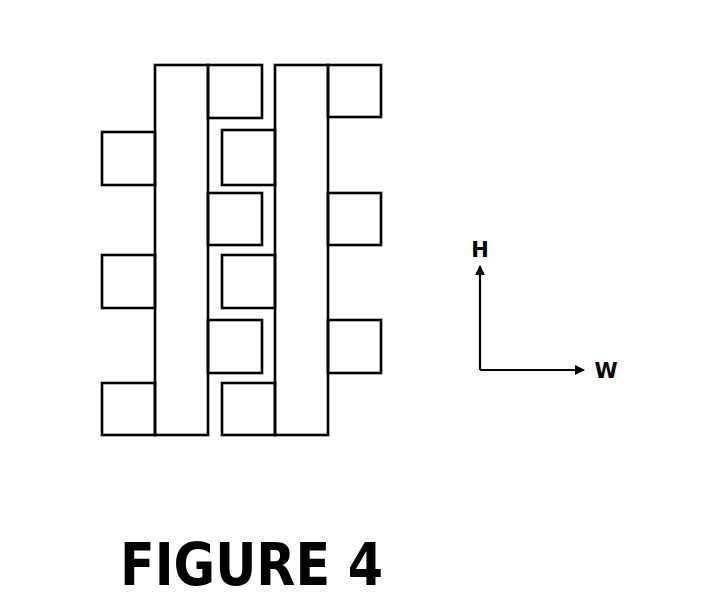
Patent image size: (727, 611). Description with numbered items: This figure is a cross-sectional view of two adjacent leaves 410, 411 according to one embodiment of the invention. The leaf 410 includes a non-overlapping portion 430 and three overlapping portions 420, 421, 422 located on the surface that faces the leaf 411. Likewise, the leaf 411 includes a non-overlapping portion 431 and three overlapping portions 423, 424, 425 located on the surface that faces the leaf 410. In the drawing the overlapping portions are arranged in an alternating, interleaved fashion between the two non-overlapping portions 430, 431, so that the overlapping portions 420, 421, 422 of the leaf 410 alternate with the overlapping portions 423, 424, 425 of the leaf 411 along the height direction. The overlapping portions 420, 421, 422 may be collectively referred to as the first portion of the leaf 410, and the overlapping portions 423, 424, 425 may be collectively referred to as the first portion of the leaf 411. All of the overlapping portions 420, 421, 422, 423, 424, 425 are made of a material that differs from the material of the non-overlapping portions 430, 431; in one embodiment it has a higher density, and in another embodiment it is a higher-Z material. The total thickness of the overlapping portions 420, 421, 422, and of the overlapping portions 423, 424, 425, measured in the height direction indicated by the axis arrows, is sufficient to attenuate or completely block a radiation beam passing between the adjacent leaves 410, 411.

The leaf 410 is at (146, 81).
The leaf 411 is at (306, 51).
The overlapping portion 420 is at (235, 91).
The overlapping portion 421 is at (235, 219).
The overlapping portion 422 is at (235, 346).
The overlapping portion 423 is at (248, 157).
The overlapping portion 424 is at (248, 281).
The overlapping portion 425 is at (248, 409).
The non-overlapping portion 430 is at (181, 250).
The non-overlapping portion 431 is at (301, 250).